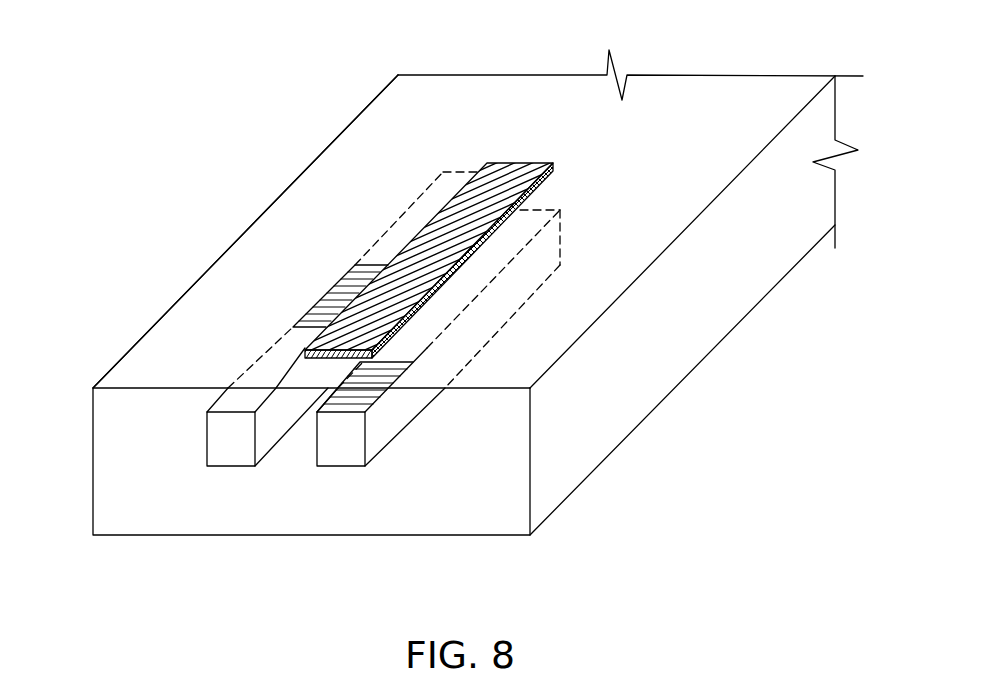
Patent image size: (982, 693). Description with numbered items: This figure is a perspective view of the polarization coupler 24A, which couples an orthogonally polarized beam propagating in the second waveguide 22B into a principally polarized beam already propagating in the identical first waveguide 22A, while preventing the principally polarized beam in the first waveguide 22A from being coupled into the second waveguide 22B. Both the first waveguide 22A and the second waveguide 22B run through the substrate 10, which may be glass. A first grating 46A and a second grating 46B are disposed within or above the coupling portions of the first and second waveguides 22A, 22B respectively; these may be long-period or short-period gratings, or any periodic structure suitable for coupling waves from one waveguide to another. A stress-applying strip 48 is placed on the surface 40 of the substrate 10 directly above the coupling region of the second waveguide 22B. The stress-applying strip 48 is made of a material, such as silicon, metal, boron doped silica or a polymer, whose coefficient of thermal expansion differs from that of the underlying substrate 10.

The substrate 10 is at (677, 356).
The polarization coupler 24A is at (445, 58).
The surface 40 is at (124, 374).
The first waveguide 22A is at (230, 467).
The second waveguide 22B is at (336, 467).
The first grating 46A is at (318, 304).
The second grating 46B is at (372, 403).
The stress-applying strip 48 is at (521, 163).